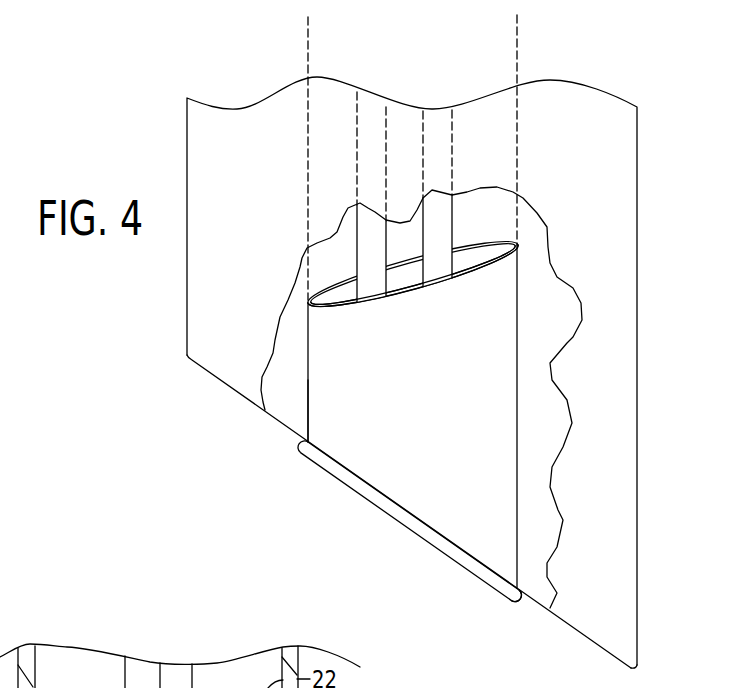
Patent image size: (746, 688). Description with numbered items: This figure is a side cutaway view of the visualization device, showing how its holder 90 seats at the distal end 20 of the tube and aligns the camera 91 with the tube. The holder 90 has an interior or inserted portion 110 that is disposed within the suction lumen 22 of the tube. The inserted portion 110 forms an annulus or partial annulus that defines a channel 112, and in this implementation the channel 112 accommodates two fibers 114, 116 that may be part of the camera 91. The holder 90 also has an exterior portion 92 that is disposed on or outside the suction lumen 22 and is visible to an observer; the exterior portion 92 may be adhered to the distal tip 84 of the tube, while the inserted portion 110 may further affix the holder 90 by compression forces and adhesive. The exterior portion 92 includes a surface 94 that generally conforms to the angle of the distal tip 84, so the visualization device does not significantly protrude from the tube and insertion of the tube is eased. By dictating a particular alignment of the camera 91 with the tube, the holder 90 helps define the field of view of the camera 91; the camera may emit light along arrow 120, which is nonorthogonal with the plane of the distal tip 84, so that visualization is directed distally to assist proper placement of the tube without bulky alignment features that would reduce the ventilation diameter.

The distal end 20 is at (641, 389).
The suction lumen 22 is at (335, 250).
The distal tip 84 is at (640, 670).
The holder 90 is at (307, 418).
The camera 91 is at (462, 216).
The exterior portion 92 is at (522, 601).
The surface 94 is at (486, 599).
The inserted portion 110 is at (307, 363).
The channel 112 is at (335, 303).
The fiber 114 is at (370, 227).
The fiber 116 is at (438, 213).
The arrow 120 is at (507, 37).